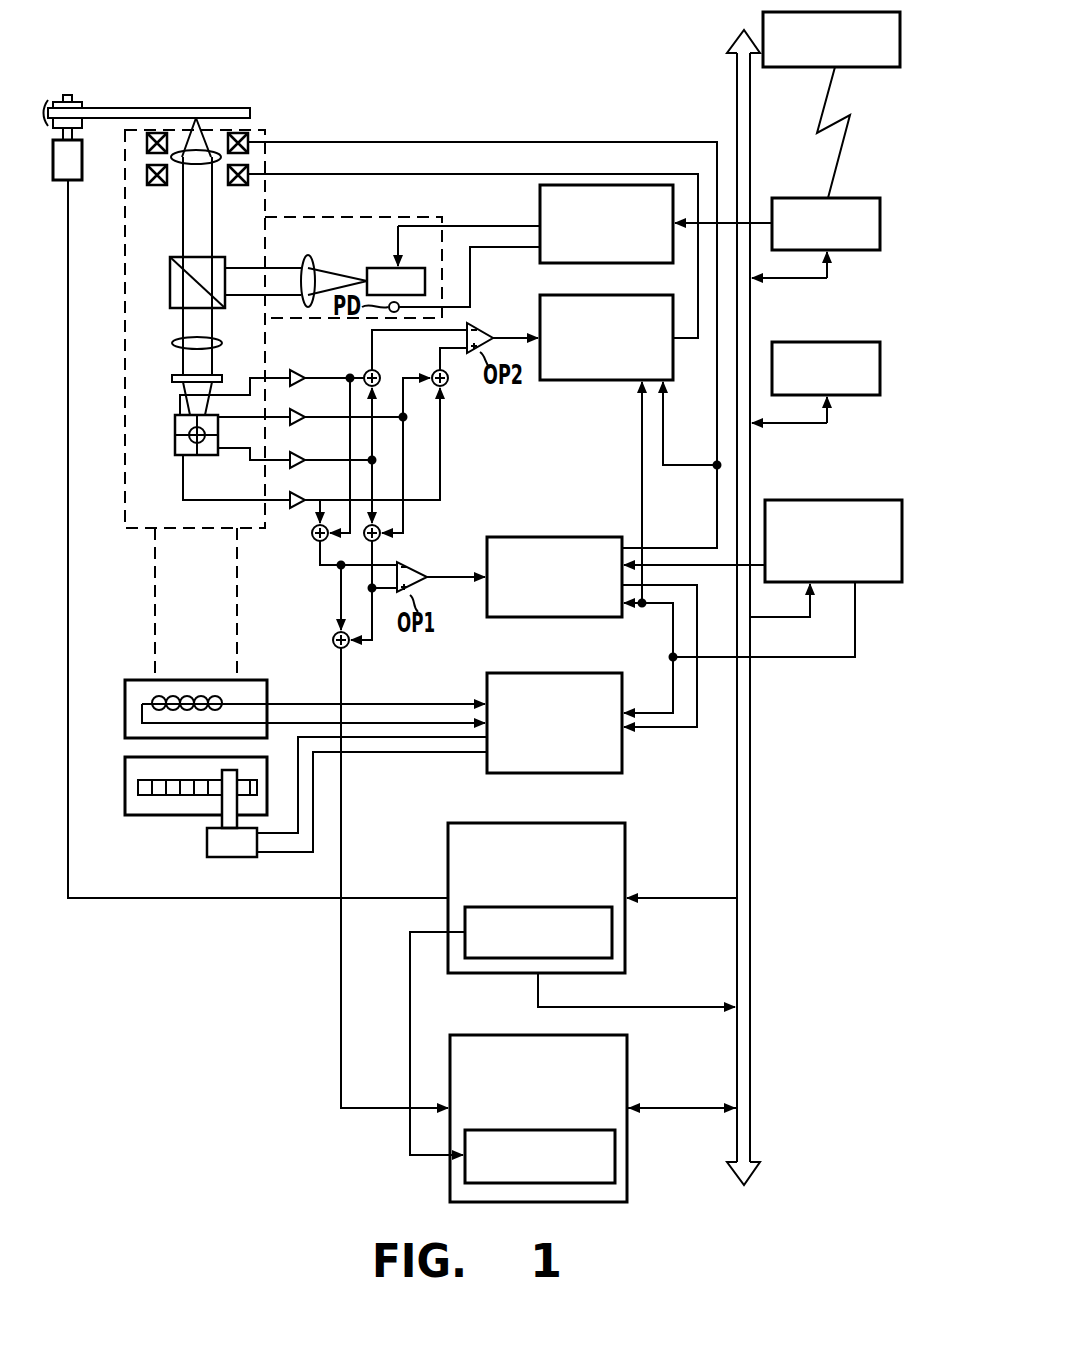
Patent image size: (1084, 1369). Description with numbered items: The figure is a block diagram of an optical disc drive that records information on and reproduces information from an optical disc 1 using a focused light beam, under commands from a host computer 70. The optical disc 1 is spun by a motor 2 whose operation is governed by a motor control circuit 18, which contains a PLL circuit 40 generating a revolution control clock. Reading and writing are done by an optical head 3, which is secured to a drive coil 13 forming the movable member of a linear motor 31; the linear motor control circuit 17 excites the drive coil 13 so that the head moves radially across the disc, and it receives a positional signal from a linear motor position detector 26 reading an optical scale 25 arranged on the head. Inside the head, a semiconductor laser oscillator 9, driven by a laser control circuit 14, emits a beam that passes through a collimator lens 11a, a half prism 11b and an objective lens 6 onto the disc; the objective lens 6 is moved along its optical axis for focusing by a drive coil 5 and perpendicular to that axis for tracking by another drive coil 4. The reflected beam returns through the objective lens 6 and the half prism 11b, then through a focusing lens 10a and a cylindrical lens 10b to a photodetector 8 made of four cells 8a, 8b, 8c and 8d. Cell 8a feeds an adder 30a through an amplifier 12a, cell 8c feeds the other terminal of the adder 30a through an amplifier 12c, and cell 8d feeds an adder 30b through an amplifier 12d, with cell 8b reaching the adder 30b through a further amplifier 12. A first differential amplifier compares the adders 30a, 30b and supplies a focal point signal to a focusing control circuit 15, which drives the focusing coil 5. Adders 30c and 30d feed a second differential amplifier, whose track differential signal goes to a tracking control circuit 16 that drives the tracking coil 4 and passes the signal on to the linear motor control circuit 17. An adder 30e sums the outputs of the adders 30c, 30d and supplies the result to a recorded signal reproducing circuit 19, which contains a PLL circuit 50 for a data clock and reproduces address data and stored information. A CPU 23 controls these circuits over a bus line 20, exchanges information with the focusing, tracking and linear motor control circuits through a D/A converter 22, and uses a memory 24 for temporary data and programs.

The optical disc 1 is at (165, 107).
The motor 2 is at (80, 183).
The optical head 3 is at (298, 215).
The drive coil 4 is at (255, 129).
The drive coil 5 is at (238, 186).
The objective lens 6 is at (196, 165).
The photodetector 8 is at (175, 440).
The photodetector cell 8a is at (178, 418).
The photodetector cell 8b is at (218, 430).
The photodetector cell 8c is at (210, 455).
The photodetector cell 8d is at (180, 450).
The semiconductor laser oscillator 9 is at (378, 265).
The focusing lens 10a is at (172, 340).
The cylindrical lens 10b is at (172, 377).
The collimator lens 11a is at (300, 262).
The half prism 11b is at (170, 293).
The amplifier 12 is at (297, 407).
The amplifier 12a is at (295, 370).
The amplifier 12c is at (298, 450).
The amplifier 12d is at (298, 490).
The drive coil 13 is at (192, 694).
The laser control circuit 14 is at (540, 203).
The focusing control circuit 15 is at (566, 381).
The tracking control circuit 16 is at (570, 537).
The linear motor control circuit 17 is at (570, 673).
The motor control circuit 18 is at (578, 823).
The recorded signal reproducing circuit 19 is at (627, 1050).
The bus line 20 is at (752, 918).
The D/A converter 22 is at (840, 500).
The CPU 23 is at (857, 250).
The memory 24 is at (862, 395).
The optical scale 25 is at (125, 803).
The linear motor position detector 26 is at (207, 845).
The adder 30a is at (395, 360).
The adder 30b is at (446, 385).
The adder 30c is at (314, 540).
The adder 30d is at (380, 540).
The adder 30e is at (333, 638).
The linear motor 31 is at (177, 689).
The PLL circuit 40 is at (612, 932).
The PLL circuit 50 is at (615, 1163).
The host computer 70 is at (878, 67).